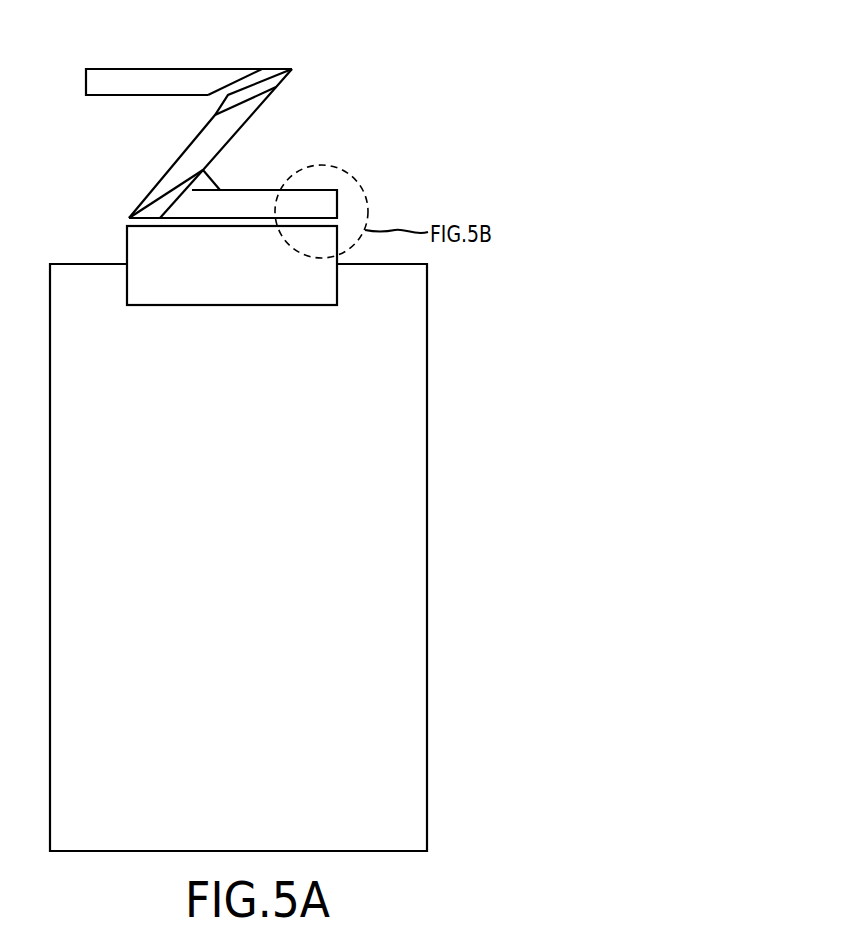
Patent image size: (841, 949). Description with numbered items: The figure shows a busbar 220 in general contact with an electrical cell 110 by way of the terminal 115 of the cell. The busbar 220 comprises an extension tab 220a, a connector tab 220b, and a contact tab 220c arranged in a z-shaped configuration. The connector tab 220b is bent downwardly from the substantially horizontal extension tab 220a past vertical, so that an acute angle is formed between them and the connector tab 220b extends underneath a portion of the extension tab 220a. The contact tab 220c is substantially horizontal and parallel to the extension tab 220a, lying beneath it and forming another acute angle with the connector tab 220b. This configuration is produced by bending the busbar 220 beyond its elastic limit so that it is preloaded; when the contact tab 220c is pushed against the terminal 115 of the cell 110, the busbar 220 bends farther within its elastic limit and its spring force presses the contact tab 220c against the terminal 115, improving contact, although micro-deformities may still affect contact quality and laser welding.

The busbar 220 is at (270, 113).
The extension tab 220a is at (148, 73).
The connector tab 220b is at (195, 147).
The contact tab 220c is at (330, 200).
The terminal 115 is at (147, 240).
The electrical cell 110 is at (428, 567).